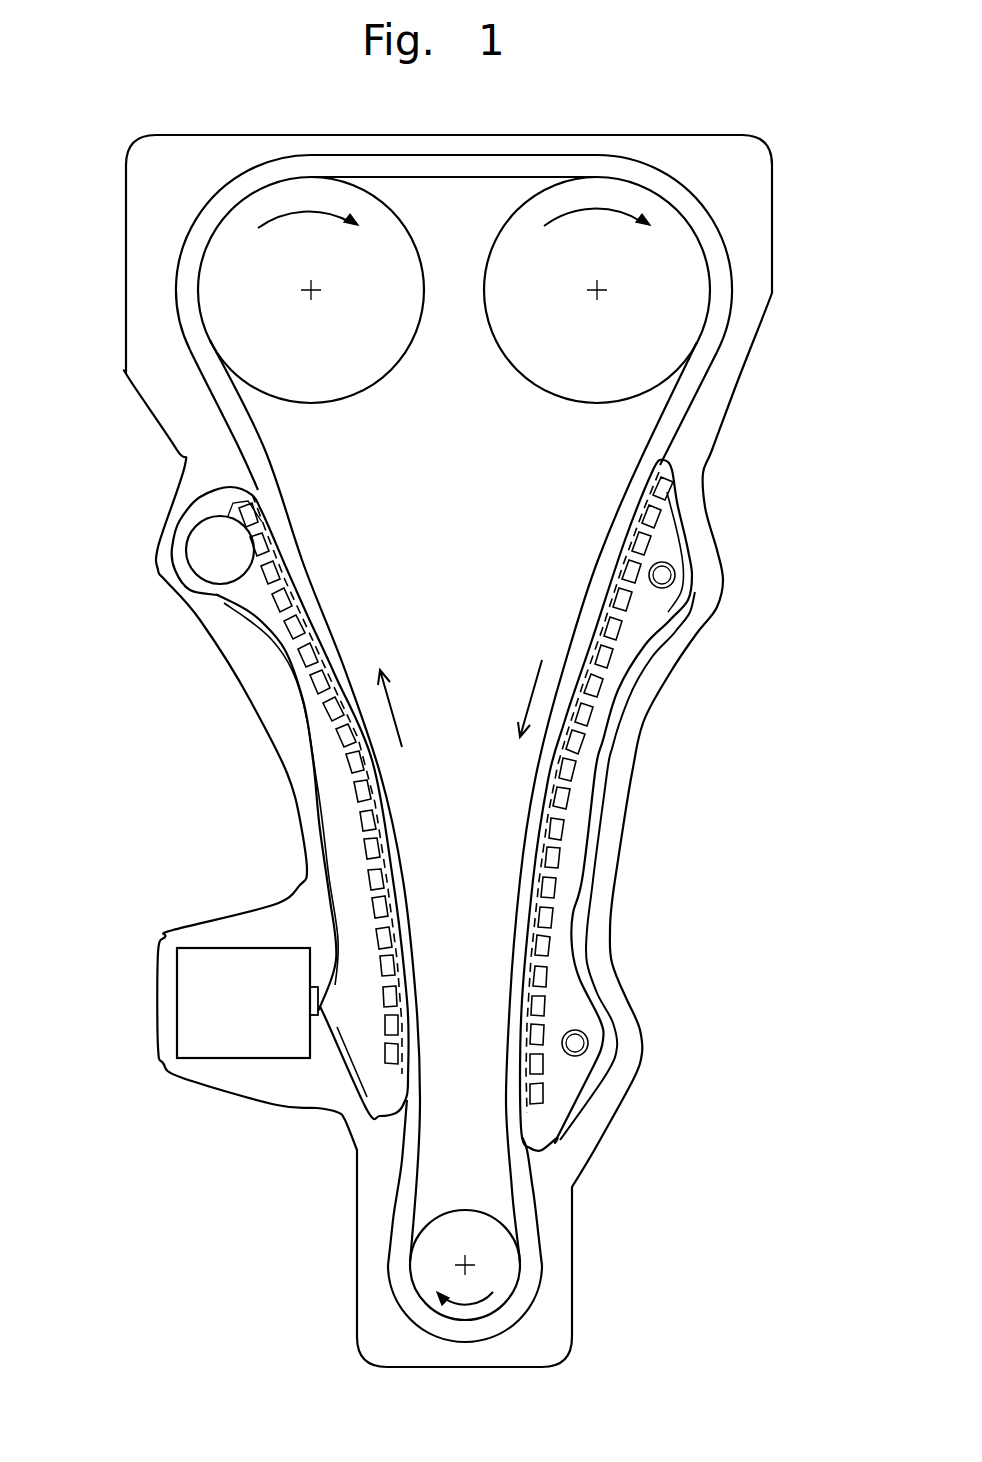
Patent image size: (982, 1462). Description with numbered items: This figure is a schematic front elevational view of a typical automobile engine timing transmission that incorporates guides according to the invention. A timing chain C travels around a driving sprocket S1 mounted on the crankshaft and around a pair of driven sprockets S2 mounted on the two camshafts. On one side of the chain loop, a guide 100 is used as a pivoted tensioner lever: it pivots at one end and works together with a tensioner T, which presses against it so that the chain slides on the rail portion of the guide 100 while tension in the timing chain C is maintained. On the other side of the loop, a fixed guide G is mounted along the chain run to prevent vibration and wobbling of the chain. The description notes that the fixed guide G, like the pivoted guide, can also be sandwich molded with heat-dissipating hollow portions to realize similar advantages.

The timing chain C is at (464, 160).
The driven sprockets S2 is at (215, 280).
The driving sprocket S1 is at (505, 1273).
The guide 100 is at (330, 775).
The fixed guide G is at (619, 798).
The tensioner T is at (225, 1047).